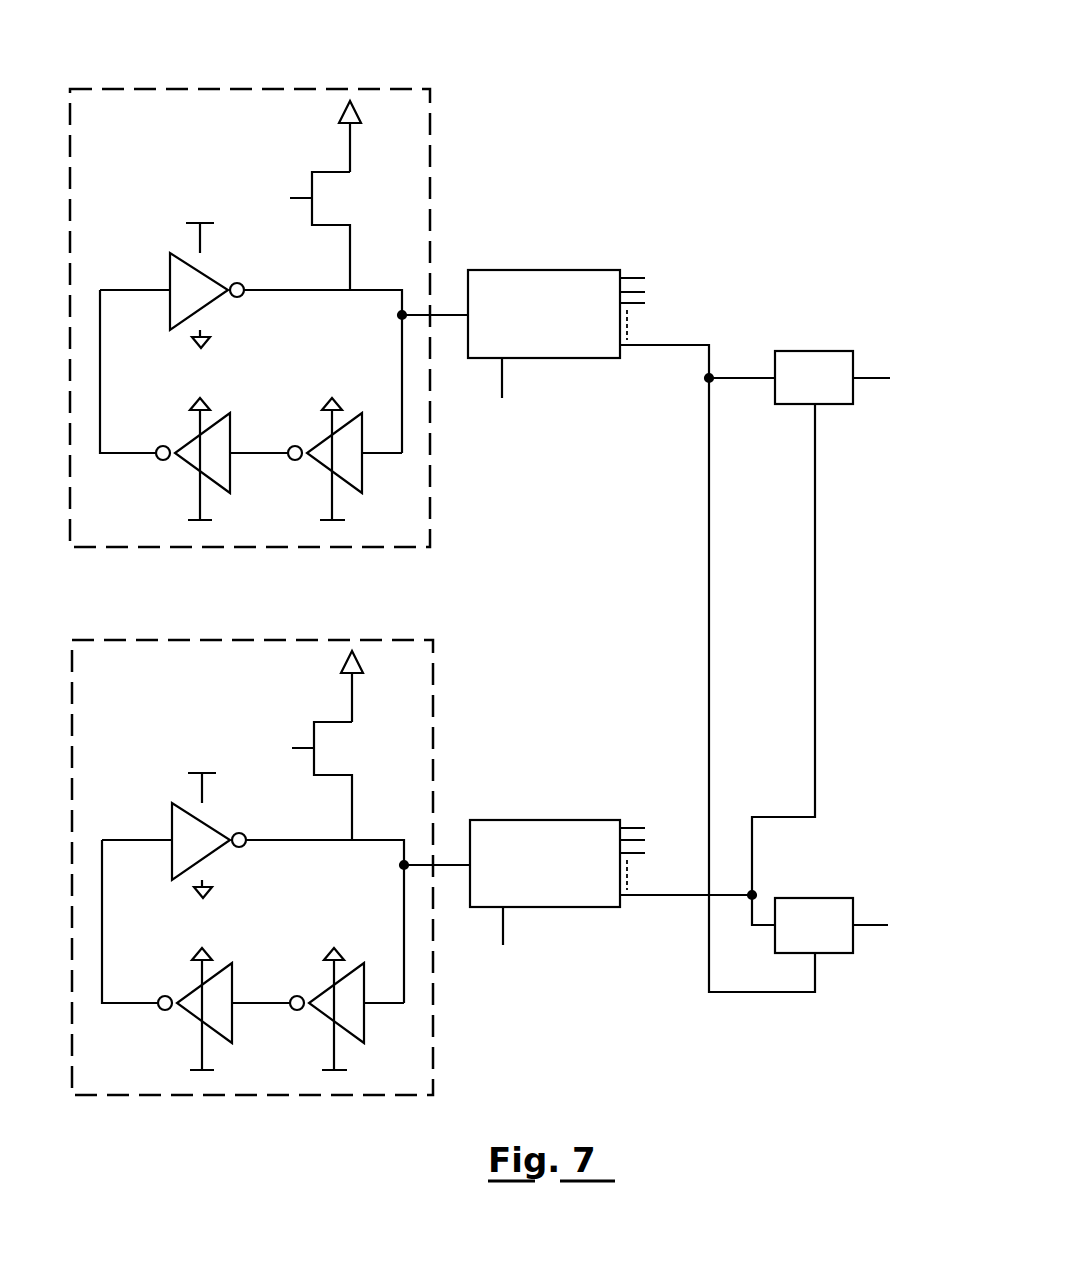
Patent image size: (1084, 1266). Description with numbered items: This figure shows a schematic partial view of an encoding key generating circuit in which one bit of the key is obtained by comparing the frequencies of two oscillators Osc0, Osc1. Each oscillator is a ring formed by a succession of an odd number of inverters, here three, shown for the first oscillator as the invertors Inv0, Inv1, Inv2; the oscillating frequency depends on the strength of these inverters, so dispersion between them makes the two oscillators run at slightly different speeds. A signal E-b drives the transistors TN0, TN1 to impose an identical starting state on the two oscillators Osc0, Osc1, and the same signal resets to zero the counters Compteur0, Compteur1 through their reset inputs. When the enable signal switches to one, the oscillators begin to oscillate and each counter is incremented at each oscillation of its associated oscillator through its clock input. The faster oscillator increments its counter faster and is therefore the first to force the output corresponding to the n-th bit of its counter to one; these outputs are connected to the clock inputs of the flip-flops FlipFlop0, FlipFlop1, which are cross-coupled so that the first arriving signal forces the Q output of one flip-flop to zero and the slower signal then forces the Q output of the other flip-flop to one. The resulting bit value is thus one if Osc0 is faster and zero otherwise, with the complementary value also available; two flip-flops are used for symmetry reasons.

The oscillator Osc0 is at (276, 275).
The oscillator Osc1 is at (280, 904).
The invertor Inv0 is at (165, 235).
The invertor Inv1 is at (352, 392).
The invertor Inv2 is at (180, 415).
The transistor TN0 is at (337, 198).
The transistor TN1 is at (355, 765).
The counter Compteur0 is at (598, 218).
The counter Compteur1 is at (555, 770).
The flip-flop FlipFlop0 is at (817, 338).
The flip-flop FlipFlop1 is at (815, 965).